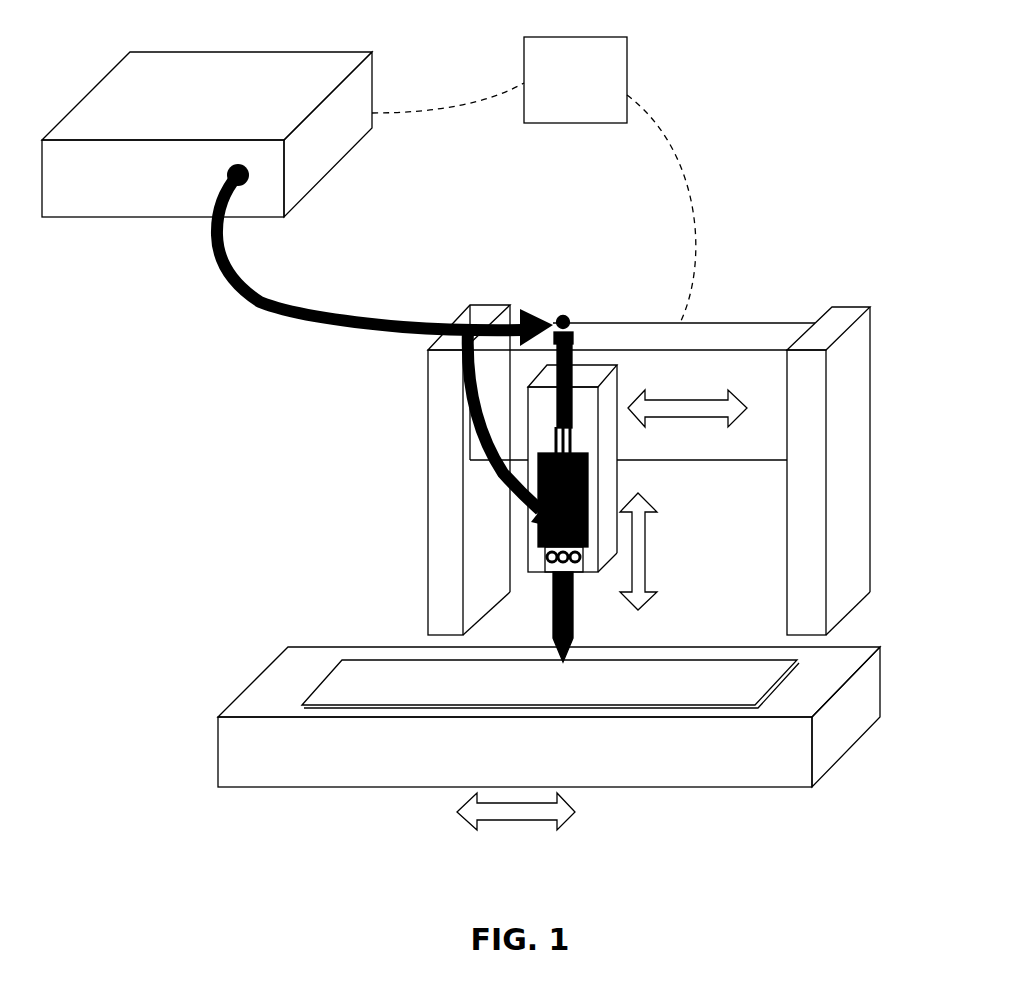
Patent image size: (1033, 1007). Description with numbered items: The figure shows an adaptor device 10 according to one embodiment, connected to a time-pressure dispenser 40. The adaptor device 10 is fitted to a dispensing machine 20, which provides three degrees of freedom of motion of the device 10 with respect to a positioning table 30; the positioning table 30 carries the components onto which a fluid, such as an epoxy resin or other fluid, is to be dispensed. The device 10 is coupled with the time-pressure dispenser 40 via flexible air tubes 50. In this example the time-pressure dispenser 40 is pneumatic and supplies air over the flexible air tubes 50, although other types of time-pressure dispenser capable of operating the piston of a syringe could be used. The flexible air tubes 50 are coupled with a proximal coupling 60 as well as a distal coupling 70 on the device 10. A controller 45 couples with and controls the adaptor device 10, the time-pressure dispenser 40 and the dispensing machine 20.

The adaptor device 10 is at (520, 463).
The dispensing machine 20 is at (418, 406).
The positioning table 30 is at (275, 686).
The time-pressure dispenser 40 is at (380, 67).
The controller 45 is at (637, 57).
The flexible air tubes 50 is at (298, 322).
The proximal coupling 60 is at (535, 568).
The distal coupling 70 is at (585, 315).